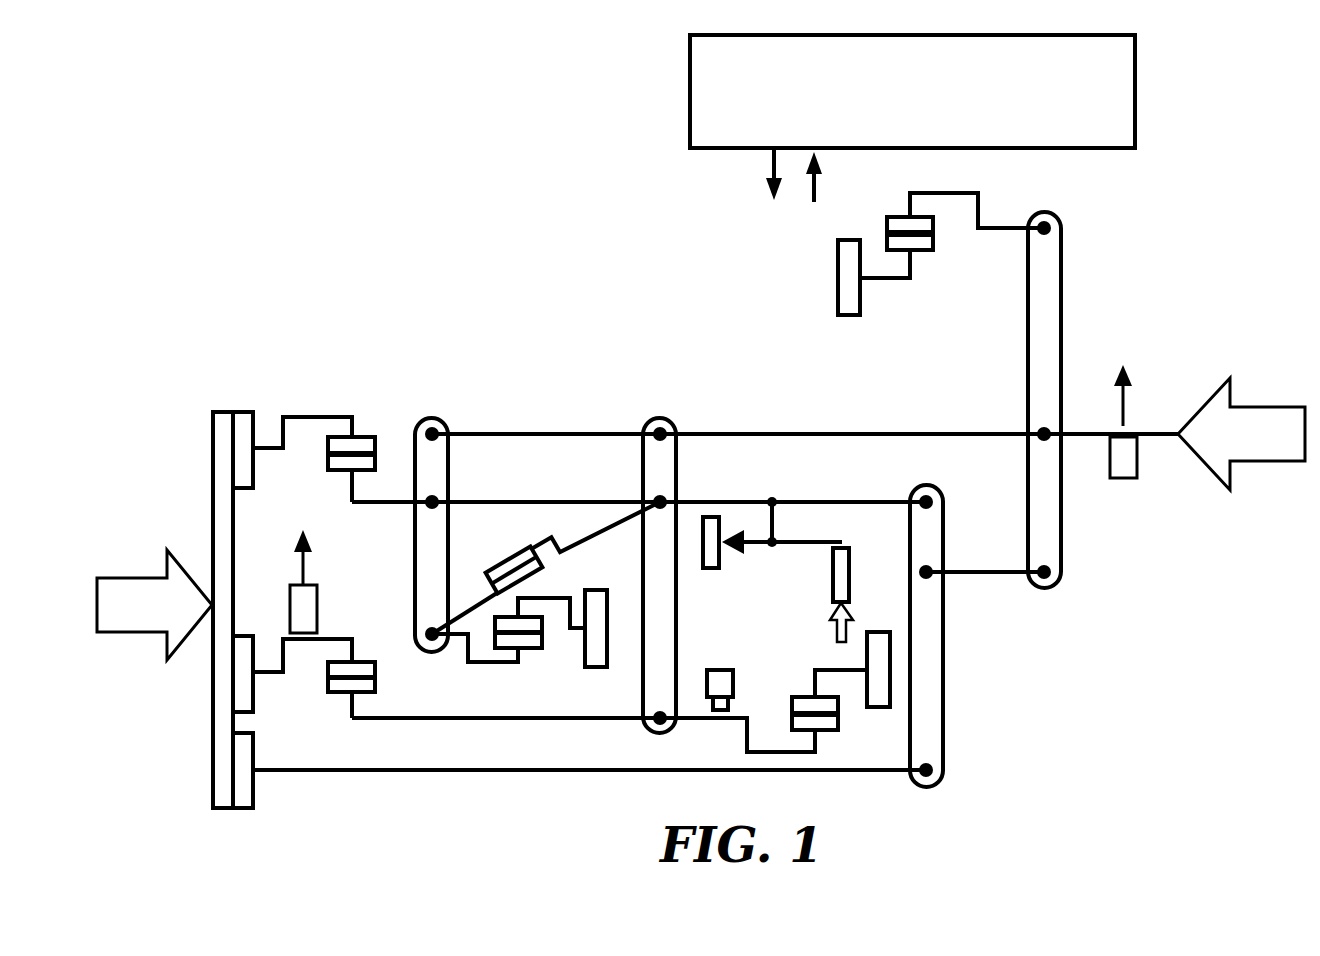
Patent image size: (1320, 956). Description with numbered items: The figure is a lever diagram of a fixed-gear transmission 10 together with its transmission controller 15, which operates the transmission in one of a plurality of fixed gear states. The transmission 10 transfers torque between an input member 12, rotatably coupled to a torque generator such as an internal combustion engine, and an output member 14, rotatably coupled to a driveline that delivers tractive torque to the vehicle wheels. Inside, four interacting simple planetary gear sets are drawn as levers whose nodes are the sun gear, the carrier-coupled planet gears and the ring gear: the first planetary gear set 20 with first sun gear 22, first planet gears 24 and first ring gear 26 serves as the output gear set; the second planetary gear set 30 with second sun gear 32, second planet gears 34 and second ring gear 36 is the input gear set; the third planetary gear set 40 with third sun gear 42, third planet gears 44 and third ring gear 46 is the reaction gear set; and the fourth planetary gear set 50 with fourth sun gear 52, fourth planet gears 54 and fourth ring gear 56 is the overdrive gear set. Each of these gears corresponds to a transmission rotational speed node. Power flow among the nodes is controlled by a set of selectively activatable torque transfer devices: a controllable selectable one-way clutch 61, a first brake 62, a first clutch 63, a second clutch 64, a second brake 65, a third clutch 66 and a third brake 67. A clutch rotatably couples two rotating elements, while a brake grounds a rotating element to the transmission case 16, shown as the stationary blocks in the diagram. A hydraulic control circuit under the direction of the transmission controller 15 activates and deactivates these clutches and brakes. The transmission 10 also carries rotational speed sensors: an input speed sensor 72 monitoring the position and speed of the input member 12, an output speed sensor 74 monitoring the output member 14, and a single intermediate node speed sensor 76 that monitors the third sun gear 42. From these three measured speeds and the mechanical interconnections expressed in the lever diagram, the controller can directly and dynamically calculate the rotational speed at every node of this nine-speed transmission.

The fixed-gear transmission 10 is at (408, 216).
The input member 12 is at (218, 772).
The output member 14 is at (1155, 428).
The transmission controller 15 is at (926, 106).
The transmission case 16 is at (846, 263).
The first planetary gear set 20 is at (1070, 286).
The first sun gear 22 is at (1056, 566).
The first planet gears 24 is at (1041, 428).
The first ring gear 26 is at (1057, 223).
The second planetary gear set 30 is at (955, 686).
The second sun gear 32 is at (944, 768).
The second planet gears 34 is at (944, 578).
The second ring gear 36 is at (942, 496).
The third planetary gear set 40 is at (632, 459).
The third sun gear 42 is at (656, 726).
The third planet gears 44 is at (672, 495).
The third ring gear 46 is at (672, 428).
The fourth planetary gear set 50 is at (428, 402).
The fourth sun gear 52 is at (432, 641).
The fourth planet gears 54 is at (437, 498).
The fourth ring gear 56 is at (447, 432).
The controllable selectable one-way clutch 61 is at (776, 540).
The first brake 62 is at (808, 704).
The first clutch 63 is at (362, 668).
The second clutch 64 is at (512, 558).
The second brake 65 is at (925, 240).
The third clutch 66 is at (357, 437).
The third brake 67 is at (527, 640).
The input speed sensor 72 is at (318, 603).
The output speed sensor 74 is at (1137, 455).
The intermediate node speed sensor 76 is at (714, 672).